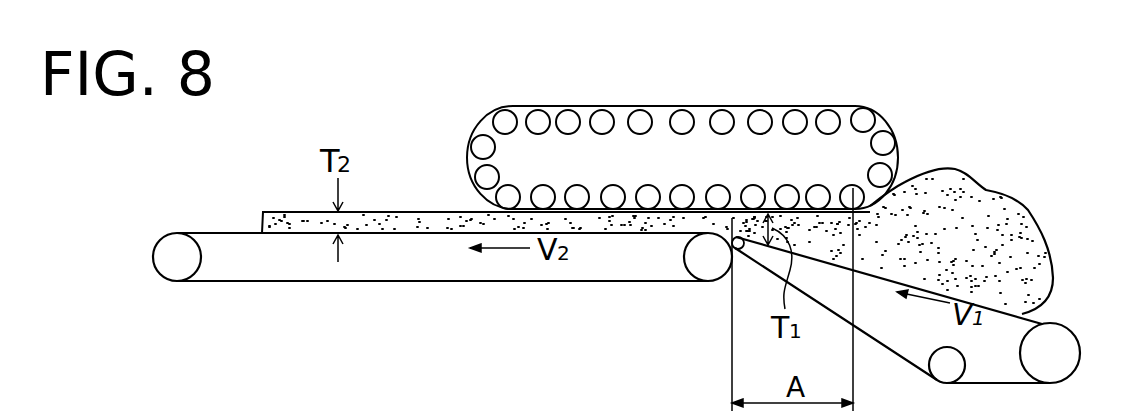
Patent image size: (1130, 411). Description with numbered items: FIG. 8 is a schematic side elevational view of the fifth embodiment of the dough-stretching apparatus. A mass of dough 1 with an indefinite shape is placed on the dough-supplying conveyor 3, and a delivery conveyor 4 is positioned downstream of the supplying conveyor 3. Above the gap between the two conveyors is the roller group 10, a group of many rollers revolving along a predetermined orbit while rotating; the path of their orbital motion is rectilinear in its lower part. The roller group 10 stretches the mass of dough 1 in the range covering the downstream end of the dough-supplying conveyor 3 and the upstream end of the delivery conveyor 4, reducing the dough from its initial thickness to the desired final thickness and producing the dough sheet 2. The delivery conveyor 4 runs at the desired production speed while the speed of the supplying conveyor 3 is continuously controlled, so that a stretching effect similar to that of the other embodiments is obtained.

The mass of dough 1 is at (973, 210).
The dough sheet 2 is at (382, 212).
The dough-supplying conveyor 3 is at (1040, 323).
The delivery conveyor 4 is at (213, 233).
The roller group 10 is at (783, 104).